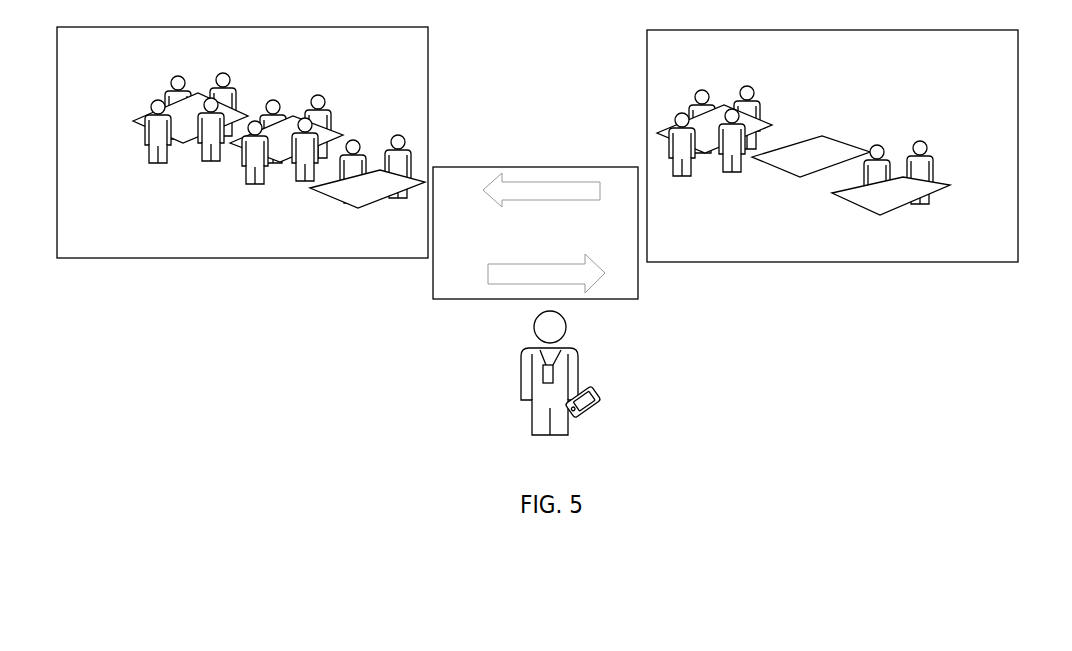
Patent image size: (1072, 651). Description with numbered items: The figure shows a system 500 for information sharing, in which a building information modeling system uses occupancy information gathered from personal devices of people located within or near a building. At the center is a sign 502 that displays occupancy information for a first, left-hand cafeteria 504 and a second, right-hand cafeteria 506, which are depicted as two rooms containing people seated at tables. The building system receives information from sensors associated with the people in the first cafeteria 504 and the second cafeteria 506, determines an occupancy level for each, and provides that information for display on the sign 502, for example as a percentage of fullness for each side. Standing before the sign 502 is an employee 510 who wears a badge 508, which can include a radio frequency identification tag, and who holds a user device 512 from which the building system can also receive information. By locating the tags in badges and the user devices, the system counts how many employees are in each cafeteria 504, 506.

The system for information sharing 500 is at (114, 524).
The sign 502 is at (458, 300).
The first cafeteria 504 is at (228, 194).
The second cafeteria 506 is at (777, 204).
The badge 508 is at (553, 369).
The employee 510 is at (522, 382).
The user device 512 is at (598, 398).